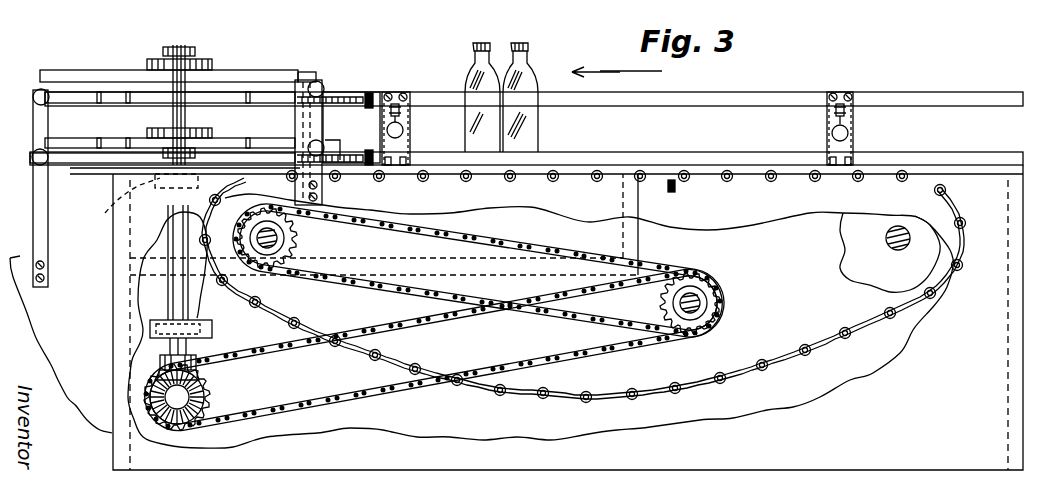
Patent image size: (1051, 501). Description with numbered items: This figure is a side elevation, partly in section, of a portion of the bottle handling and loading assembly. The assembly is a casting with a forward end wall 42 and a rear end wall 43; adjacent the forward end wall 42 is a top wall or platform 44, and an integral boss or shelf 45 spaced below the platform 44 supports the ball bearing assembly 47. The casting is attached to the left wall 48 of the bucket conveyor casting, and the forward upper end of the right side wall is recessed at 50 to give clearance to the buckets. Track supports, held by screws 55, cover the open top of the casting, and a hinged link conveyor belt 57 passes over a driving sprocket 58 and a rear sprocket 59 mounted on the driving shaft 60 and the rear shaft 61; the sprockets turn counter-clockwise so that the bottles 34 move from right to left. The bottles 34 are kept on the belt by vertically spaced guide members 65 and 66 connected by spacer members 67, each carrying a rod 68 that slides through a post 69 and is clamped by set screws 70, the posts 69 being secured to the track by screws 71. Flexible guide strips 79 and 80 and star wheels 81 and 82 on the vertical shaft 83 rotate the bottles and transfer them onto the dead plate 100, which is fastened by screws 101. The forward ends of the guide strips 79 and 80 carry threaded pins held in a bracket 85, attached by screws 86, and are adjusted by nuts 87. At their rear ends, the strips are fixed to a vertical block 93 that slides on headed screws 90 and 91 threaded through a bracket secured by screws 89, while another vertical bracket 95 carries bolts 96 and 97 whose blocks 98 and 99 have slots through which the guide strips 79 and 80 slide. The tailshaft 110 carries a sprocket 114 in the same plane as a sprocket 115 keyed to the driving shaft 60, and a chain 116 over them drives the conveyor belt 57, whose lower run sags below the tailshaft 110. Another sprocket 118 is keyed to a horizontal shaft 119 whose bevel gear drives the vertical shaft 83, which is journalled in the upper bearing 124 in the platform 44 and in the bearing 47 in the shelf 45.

The bottles 34 is at (530, 70).
The forward end wall 42 is at (125, 290).
The rear end wall 43 is at (1008, 400).
The top wall or platform 44 is at (172, 215).
The boss or shelf 45 is at (213, 327).
The ball bearing assembly 47 is at (188, 320).
The left wall 48 is at (57, 344).
The recess 50 is at (512, 266).
The screws 55 is at (678, 190).
The hinged link conveyor belt 57 is at (776, 372).
The driving sprocket 58 is at (318, 240).
The rear sprocket 59 is at (852, 281).
The driving shaft 60 is at (250, 239).
The rear shaft 61 is at (886, 238).
The guide member 65 is at (952, 95).
The guide member 66 is at (953, 152).
The spacer members 67 is at (395, 90).
The rod 68 is at (404, 131).
The post 69 is at (404, 112).
The set screws 70 is at (407, 108).
The screws 71 is at (395, 178).
The guide strip 79 is at (112, 170).
The guide strip 80 is at (170, 109).
The star wheel 81 is at (122, 140).
The star wheel 82 is at (112, 75).
The vertical shaft 83 is at (173, 118).
The bracket 85 is at (33, 212).
The screws 86 is at (48, 267).
The nuts 87 is at (36, 150).
The screws 89 is at (322, 200).
The headed screw 90 is at (330, 128).
The headed screw 91 is at (318, 81).
The vertical block 93 is at (298, 128).
The vertical bracket 95 is at (340, 108).
The bolt 96 is at (343, 158).
The bolt 97 is at (345, 96).
The block 98 is at (292, 156).
The block 99 is at (292, 103).
The dead plate 100 is at (85, 164).
The screws 101 is at (121, 200).
The tailshaft 110 is at (706, 303).
The sprocket 114 is at (658, 300).
The sprocket 115 is at (356, 258).
The chain 116 is at (512, 244).
The sprocket 118 is at (208, 396).
The horizontal shaft 119 is at (213, 378).
The upper bearing 124 is at (150, 200).